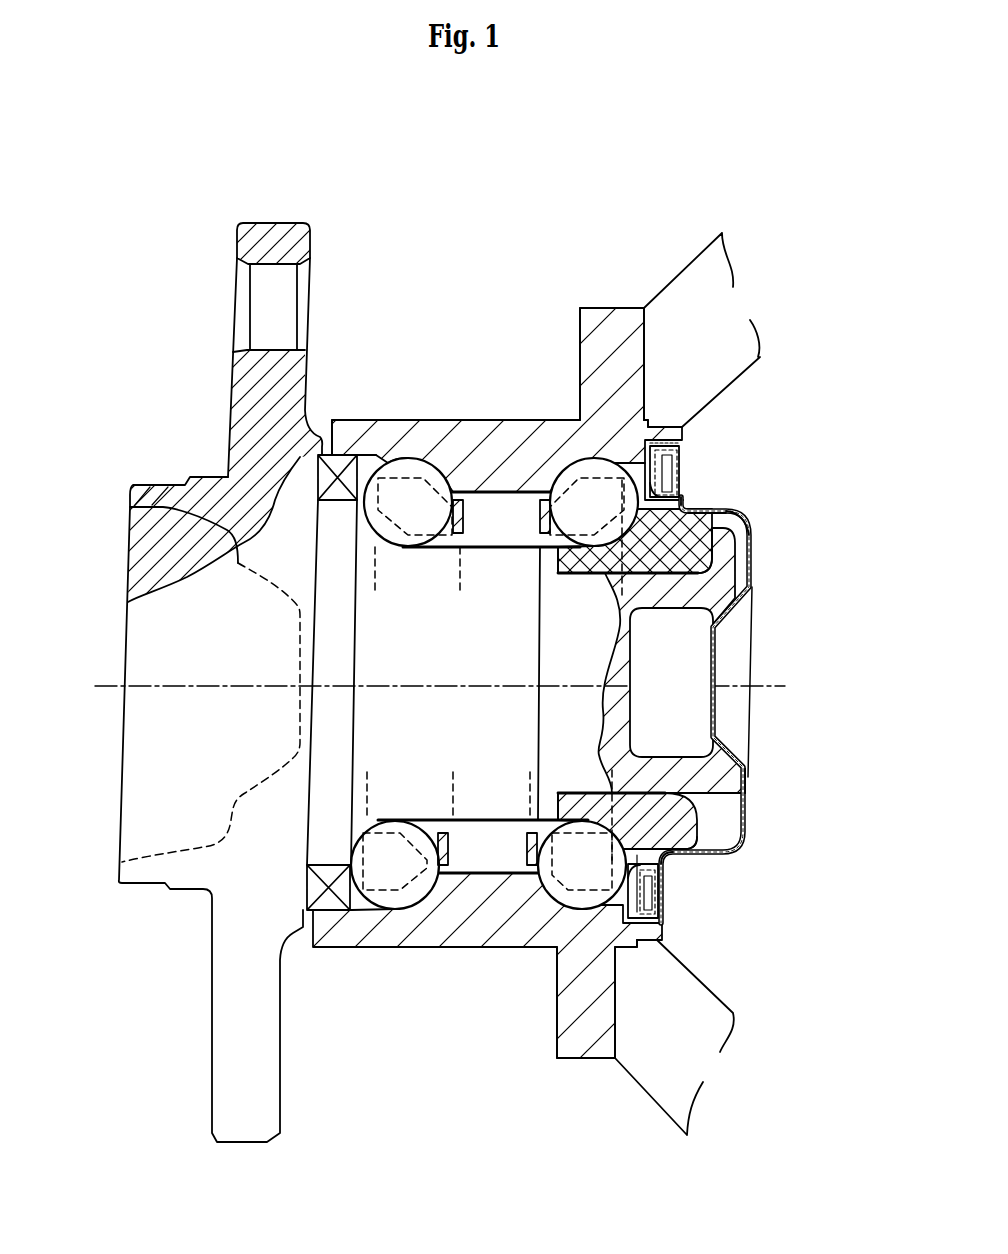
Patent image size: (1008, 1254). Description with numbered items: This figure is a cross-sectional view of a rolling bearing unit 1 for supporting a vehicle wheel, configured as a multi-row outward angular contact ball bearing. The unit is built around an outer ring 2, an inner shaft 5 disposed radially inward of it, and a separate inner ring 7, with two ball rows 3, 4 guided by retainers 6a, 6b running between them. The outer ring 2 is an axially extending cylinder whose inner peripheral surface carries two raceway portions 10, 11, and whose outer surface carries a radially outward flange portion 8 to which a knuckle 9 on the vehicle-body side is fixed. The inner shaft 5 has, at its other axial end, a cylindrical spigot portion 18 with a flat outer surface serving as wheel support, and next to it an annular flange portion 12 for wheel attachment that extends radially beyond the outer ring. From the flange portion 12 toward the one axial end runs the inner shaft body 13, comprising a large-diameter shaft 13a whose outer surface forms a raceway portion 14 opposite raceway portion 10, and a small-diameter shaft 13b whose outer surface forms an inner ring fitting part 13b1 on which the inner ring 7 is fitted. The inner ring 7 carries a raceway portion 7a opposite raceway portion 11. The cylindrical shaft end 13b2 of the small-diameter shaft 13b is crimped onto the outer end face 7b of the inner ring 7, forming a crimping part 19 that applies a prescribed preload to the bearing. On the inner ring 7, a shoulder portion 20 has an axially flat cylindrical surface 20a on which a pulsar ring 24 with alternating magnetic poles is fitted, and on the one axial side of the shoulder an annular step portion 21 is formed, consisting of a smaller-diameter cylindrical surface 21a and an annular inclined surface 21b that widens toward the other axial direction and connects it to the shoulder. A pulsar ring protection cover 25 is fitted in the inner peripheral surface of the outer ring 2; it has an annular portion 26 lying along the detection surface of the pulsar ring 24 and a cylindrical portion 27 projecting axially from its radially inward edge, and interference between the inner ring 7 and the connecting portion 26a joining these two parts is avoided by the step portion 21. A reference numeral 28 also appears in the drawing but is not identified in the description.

The rolling bearing unit 1 is at (418, 365).
The outer ring 2 is at (497, 412).
The ball row 3 is at (410, 458).
The ball row 4 is at (585, 475).
The inner shaft 5 is at (117, 750).
The retainer 6a is at (395, 878).
The retainer 6b is at (573, 876).
The inner ring 7 is at (682, 810).
The raceway portion 7a is at (560, 547).
The outer end face 7b is at (735, 849).
The flange portion 8 is at (618, 308).
The knuckle 9 is at (697, 287).
The raceway portion 10 is at (455, 445).
The raceway portion 11 is at (645, 427).
The flange portion 12 is at (305, 230).
The inner shaft body 13 is at (492, 807).
The large-diameter shaft 13a is at (480, 717).
The small-diameter shaft 13b is at (592, 676).
The inner ring fitting part 13b1 is at (598, 793).
The shaft end 13b2 is at (730, 606).
The raceway portion 14 is at (408, 549).
The spigot portion 18 is at (143, 497).
The crimping part 19 is at (748, 777).
The shoulder portion 20 is at (657, 952).
The cylindrical surface 20a is at (683, 468).
The step portion 21 is at (722, 527).
The cylindrical surface 21a is at (712, 508).
The inclined surface 21b is at (690, 498).
The pulsar ring 24 is at (683, 450).
The pulsar ring protection cover 25 is at (762, 587).
The annular portion 26 is at (668, 895).
The connecting portion 26a is at (660, 866).
The cylindrical portion 27 is at (705, 868).
The gap 28 is at (605, 588).